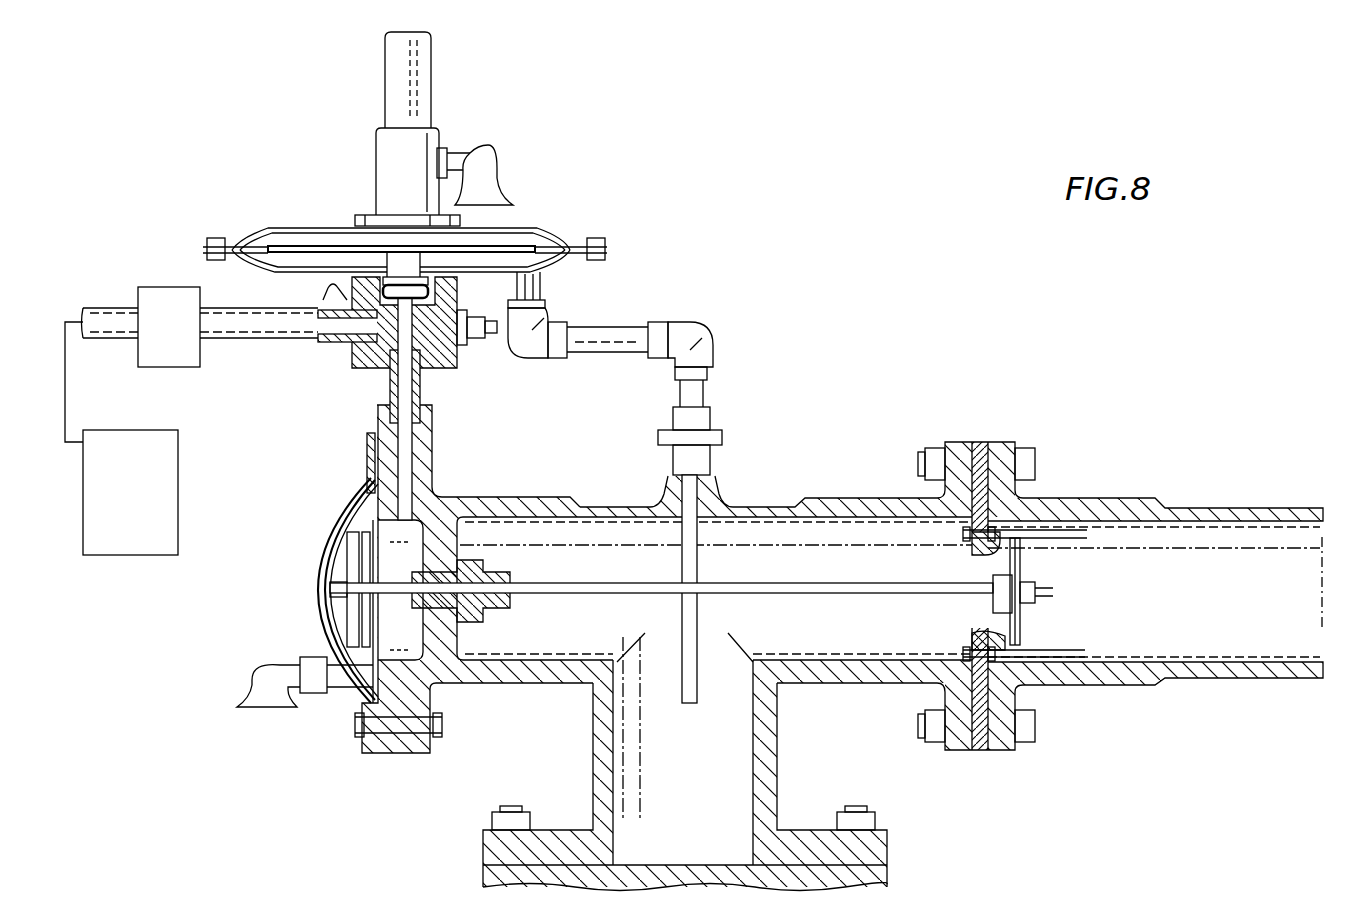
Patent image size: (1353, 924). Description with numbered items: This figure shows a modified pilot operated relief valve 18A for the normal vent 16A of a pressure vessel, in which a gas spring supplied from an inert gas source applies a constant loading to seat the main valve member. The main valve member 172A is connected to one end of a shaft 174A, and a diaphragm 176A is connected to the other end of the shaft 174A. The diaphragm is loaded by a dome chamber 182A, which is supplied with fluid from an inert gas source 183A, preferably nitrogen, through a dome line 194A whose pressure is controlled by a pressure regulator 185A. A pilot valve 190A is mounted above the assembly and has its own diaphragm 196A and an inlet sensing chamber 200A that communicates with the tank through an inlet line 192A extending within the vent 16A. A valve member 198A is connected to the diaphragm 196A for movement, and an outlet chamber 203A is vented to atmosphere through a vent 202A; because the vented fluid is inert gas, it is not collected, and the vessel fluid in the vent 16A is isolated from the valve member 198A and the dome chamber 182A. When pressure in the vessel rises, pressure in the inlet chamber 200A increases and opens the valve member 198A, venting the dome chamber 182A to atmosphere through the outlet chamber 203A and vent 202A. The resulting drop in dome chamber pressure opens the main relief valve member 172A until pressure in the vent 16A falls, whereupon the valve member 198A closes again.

The vent 16A is at (703, 826).
The pilot operated relief valve 18A is at (752, 485).
The main valve member 172A is at (1020, 560).
The shaft 174A is at (586, 597).
The diaphragm 176A is at (360, 500).
The dome chamber 182A is at (388, 627).
The inert gas source 183A is at (150, 504).
The pressure regulator 185A is at (172, 360).
The pilot valve 190A is at (523, 207).
The inlet line 192A is at (612, 358).
The dome line 194A is at (388, 388).
The diaphragm 196A is at (565, 242).
The valve member 198A is at (402, 280).
The inlet sensing chamber 200A is at (547, 262).
The vent 202A is at (323, 293).
The outlet chamber 203A is at (452, 290).